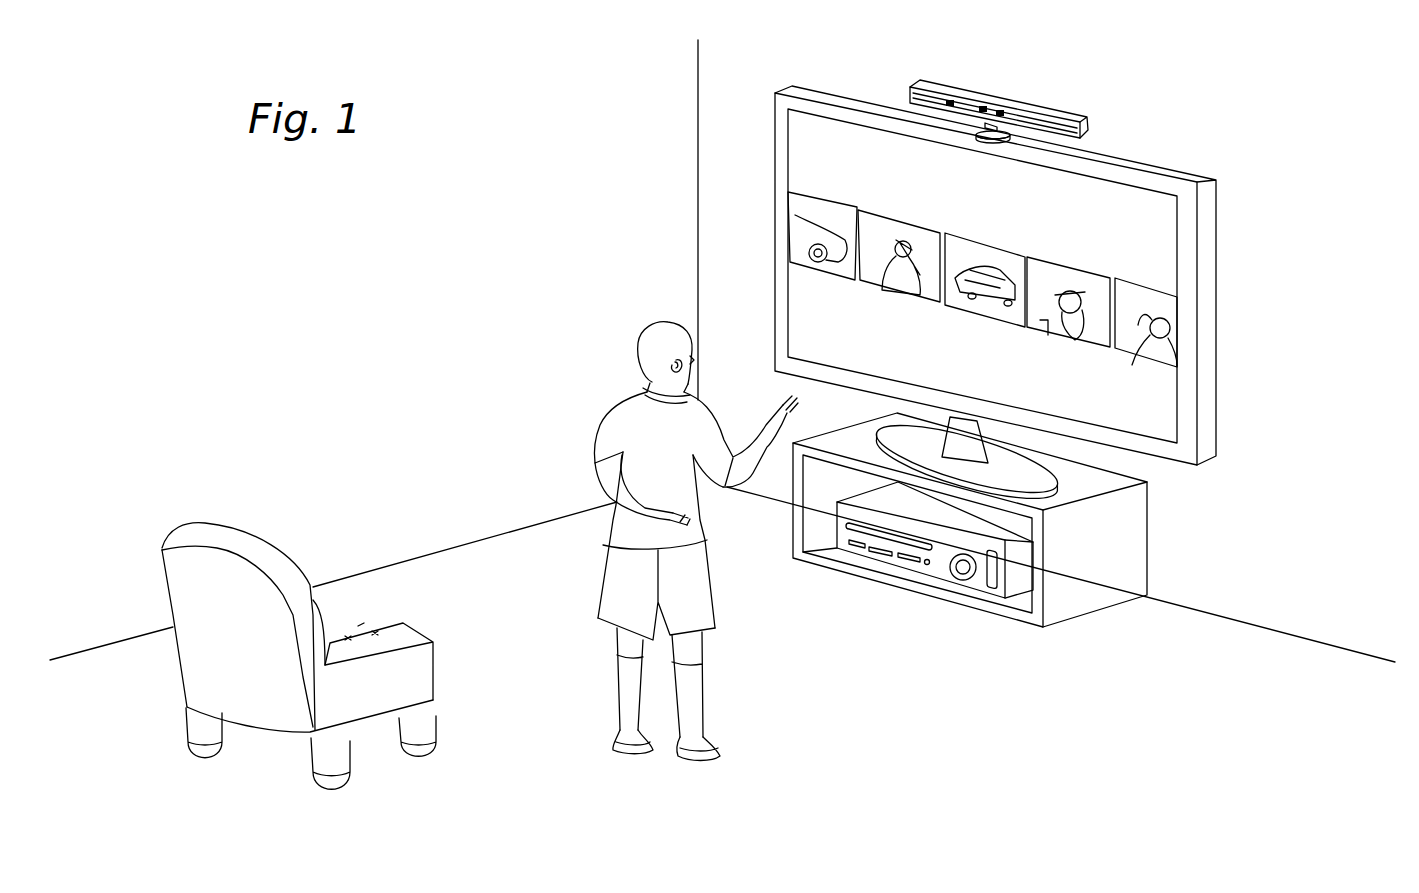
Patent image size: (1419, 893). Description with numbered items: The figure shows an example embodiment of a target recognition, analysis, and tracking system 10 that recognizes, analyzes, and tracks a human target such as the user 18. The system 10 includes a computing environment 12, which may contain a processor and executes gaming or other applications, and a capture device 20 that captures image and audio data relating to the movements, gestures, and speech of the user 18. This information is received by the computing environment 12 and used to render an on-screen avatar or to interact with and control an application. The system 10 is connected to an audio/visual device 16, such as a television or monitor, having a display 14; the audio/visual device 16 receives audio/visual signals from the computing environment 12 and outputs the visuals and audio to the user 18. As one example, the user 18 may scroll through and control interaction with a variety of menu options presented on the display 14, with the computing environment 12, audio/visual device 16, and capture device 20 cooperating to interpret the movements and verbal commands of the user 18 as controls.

The target recognition, analysis, and tracking system 10 is at (1284, 96).
The computing environment 12 is at (940, 575).
The display 14 is at (1180, 373).
The audio/visual device 16 is at (1216, 267).
The user 18 is at (630, 418).
The capture device 20 is at (1002, 98).